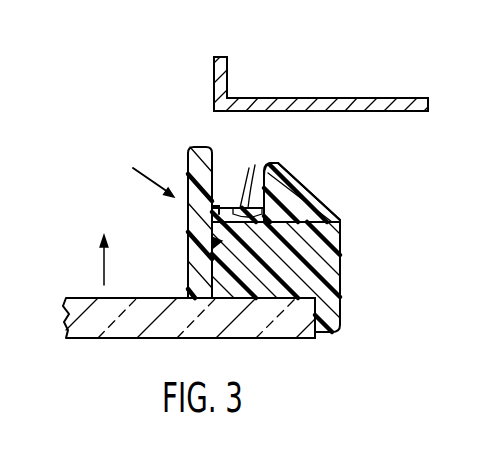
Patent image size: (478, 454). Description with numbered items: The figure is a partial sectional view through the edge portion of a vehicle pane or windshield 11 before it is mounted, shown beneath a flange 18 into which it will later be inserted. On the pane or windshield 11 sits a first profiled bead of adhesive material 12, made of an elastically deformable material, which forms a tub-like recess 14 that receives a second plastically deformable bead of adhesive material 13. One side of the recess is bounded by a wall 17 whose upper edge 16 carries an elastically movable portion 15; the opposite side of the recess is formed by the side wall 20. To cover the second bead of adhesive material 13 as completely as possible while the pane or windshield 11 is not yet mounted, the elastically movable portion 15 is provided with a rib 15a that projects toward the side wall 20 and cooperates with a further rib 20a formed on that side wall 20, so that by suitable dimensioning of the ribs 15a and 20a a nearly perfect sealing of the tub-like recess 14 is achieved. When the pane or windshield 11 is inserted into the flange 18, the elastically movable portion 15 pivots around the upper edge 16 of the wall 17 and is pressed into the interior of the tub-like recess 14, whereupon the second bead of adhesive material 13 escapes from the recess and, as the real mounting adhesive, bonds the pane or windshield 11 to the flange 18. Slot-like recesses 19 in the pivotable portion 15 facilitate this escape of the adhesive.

The pane or windshield 11 is at (99, 312).
The first profiled bead of adhesive material 12 is at (142, 173).
The second plastically deformable bead of adhesive material 13 is at (302, 270).
The tub-like recess 14 is at (213, 245).
The elastically movable portion 15 is at (299, 198).
The rib 15a is at (249, 168).
The upper edge 16 is at (340, 222).
The wall 17 is at (317, 257).
The flange 18 is at (308, 104).
The slot-like recesses 19 is at (270, 168).
The side wall 20 is at (190, 155).
The further rib 20a is at (232, 205).